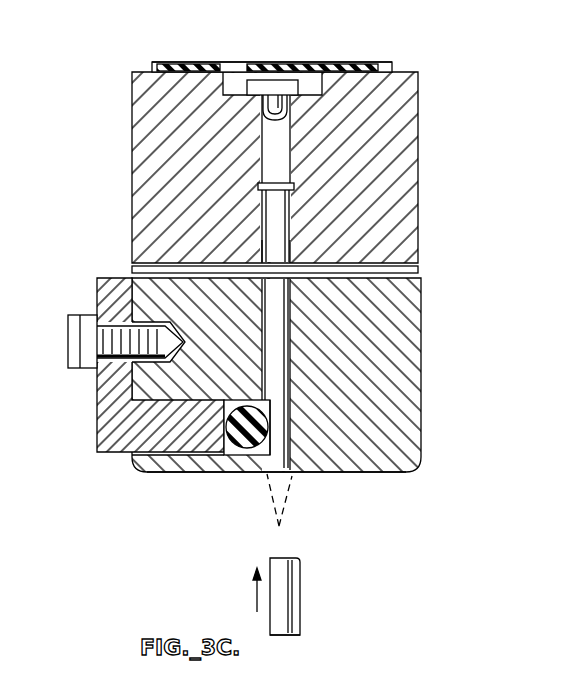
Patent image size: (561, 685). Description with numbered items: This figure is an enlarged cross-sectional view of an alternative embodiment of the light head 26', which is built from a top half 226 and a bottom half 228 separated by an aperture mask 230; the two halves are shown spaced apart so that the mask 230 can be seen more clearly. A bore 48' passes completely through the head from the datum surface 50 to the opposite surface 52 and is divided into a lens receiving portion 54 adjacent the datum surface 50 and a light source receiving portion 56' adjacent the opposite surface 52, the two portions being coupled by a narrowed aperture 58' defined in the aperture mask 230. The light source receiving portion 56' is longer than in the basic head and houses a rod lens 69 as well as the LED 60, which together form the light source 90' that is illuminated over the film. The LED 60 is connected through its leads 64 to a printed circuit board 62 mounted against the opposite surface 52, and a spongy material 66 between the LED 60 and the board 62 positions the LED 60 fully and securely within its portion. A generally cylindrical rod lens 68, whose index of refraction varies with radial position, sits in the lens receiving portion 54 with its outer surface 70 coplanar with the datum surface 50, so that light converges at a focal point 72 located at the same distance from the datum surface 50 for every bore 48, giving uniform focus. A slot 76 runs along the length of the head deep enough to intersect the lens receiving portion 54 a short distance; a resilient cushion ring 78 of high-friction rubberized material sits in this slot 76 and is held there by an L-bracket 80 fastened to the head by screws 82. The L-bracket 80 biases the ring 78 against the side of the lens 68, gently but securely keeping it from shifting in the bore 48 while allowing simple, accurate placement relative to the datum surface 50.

The light head 26' is at (80, 158).
The bore 48 is at (307, 393).
The bore 48' is at (366, 339).
The datum surface 50 is at (365, 473).
The opposite surface 52 is at (395, 68).
The lens receiving portion 54 is at (285, 428).
The light source receiving portion 56' is at (365, 139).
The aperture 58' is at (365, 248).
The LED 60 is at (285, 106).
The printed circuit board 62 is at (382, 66).
The leads 64 is at (318, 65).
The spongy material 66 is at (286, 72).
The rod lens 68 is at (302, 593).
The rod lens 69 is at (288, 217).
The outer surface 70 is at (282, 636).
The focal point 72 is at (279, 526).
The slot 76 is at (232, 450).
The resilient cushion ring 78 is at (250, 446).
The L-bracket 80 is at (97, 406).
The screws 82 is at (68, 345).
The light source 90' is at (381, 641).
The top half 226 is at (140, 188).
The bottom half 228 is at (412, 372).
The aperture mask 230 is at (420, 272).